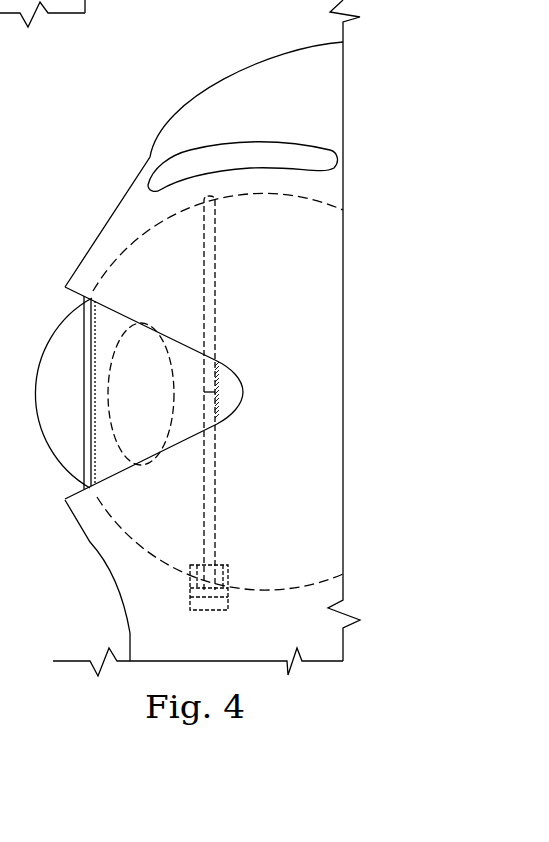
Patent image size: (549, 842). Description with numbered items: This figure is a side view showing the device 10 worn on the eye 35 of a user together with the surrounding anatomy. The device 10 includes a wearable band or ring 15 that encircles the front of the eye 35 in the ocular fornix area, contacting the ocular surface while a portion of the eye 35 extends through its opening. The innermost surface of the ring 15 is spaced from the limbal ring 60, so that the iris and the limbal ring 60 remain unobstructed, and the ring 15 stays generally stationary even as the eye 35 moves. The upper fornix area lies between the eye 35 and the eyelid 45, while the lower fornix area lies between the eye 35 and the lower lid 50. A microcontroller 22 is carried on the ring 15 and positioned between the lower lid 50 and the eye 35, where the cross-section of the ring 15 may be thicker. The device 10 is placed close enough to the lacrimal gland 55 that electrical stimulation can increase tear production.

The device 10 is at (186, 284).
The ring 15 is at (217, 268).
The microcontroller 22 is at (223, 597).
The eye 35 is at (115, 468).
The eyelid 45 is at (90, 243).
The lower lid 50 is at (90, 542).
The lacrimal gland 55 is at (250, 140).
The limbal ring 60 is at (75, 478).